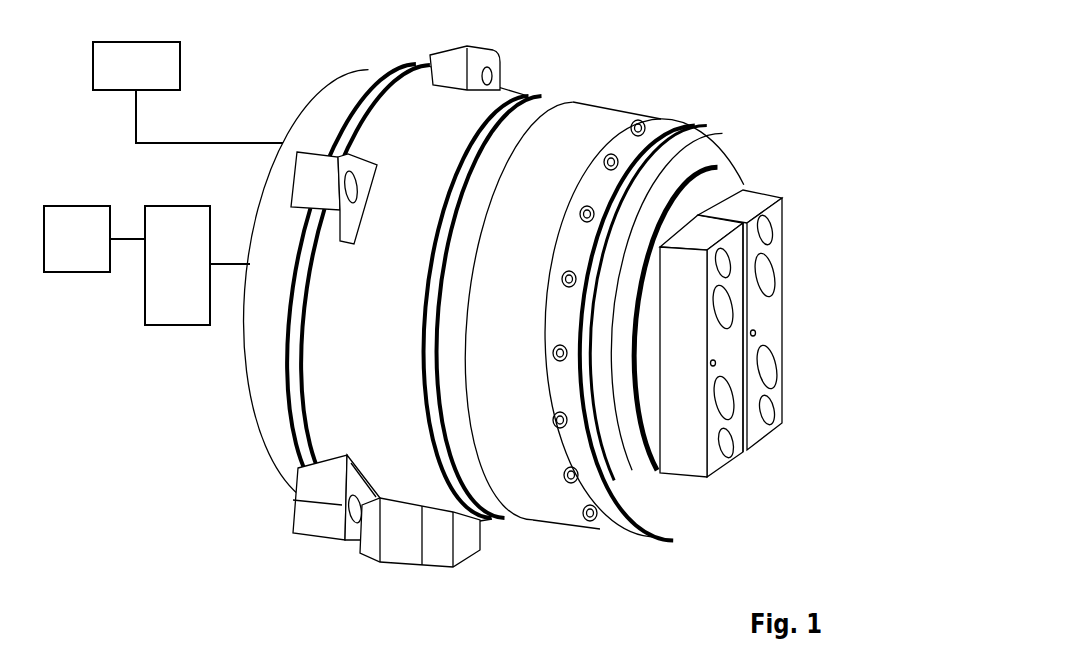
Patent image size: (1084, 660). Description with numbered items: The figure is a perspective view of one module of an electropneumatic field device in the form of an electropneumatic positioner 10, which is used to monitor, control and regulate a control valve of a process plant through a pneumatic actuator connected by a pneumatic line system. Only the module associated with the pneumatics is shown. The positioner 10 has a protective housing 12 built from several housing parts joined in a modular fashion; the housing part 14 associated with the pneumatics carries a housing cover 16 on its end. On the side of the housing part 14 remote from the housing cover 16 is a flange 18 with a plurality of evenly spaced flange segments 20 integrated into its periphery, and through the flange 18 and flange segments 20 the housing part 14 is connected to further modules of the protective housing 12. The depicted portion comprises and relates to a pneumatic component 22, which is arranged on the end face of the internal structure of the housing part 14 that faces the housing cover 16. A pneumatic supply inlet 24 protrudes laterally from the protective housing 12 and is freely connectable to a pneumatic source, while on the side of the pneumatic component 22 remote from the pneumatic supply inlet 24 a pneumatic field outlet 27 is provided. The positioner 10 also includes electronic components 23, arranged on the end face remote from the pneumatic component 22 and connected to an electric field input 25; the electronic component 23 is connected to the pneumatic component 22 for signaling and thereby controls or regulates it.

The electropneumatic positioner 10 is at (159, 481).
The protective housing 12 is at (529, 92).
The housing part 14 is at (340, 343).
The housing cover 16 is at (592, 130).
The flange 18 is at (347, 106).
The flange segments 20 is at (480, 49).
The pneumatic component 22 is at (652, 413).
The electronic components 23 is at (143, 310).
The pneumatic supply inlet 24 is at (757, 208).
The electric field input 25 is at (70, 204).
The pneumatic field outlet 27 is at (100, 92).